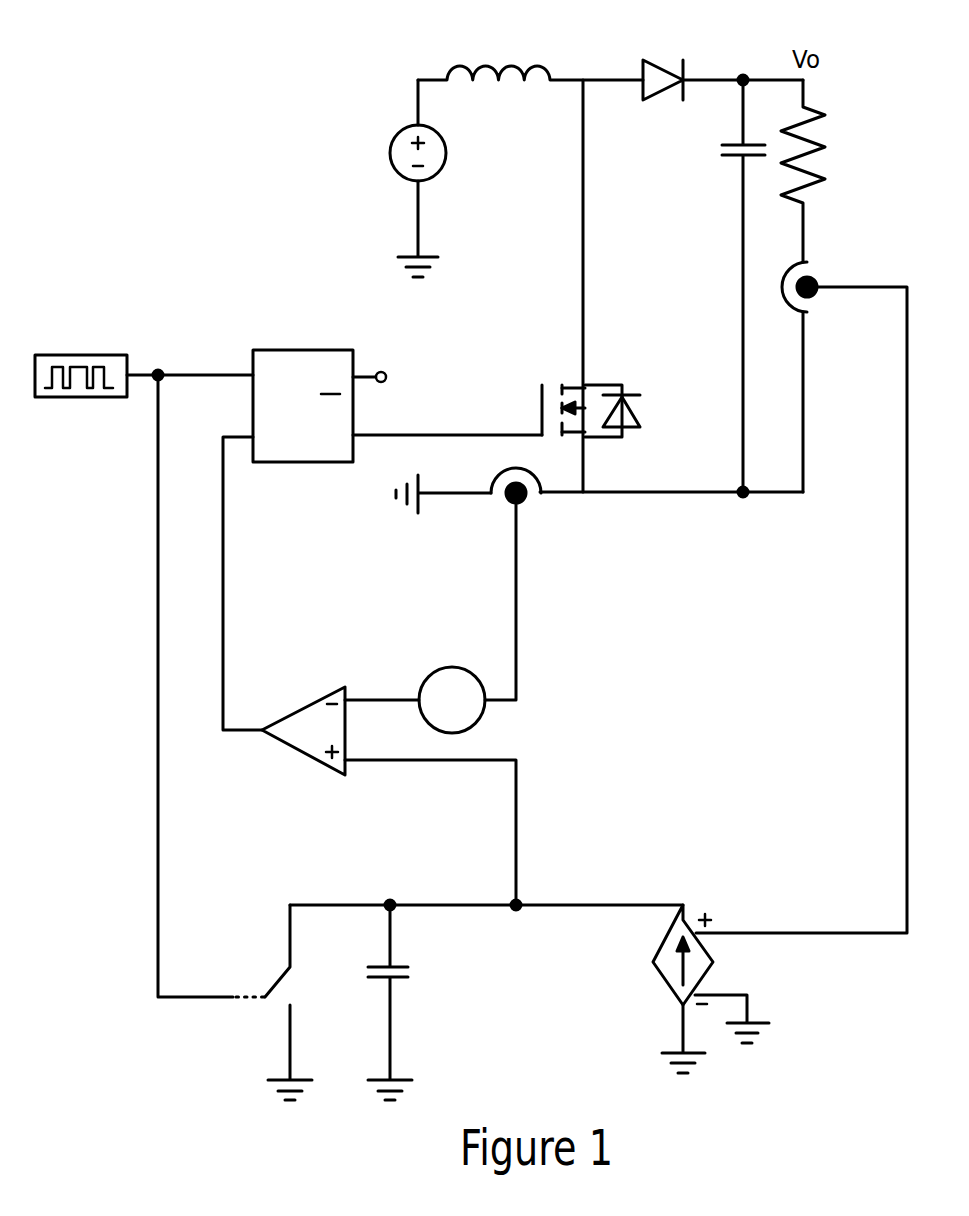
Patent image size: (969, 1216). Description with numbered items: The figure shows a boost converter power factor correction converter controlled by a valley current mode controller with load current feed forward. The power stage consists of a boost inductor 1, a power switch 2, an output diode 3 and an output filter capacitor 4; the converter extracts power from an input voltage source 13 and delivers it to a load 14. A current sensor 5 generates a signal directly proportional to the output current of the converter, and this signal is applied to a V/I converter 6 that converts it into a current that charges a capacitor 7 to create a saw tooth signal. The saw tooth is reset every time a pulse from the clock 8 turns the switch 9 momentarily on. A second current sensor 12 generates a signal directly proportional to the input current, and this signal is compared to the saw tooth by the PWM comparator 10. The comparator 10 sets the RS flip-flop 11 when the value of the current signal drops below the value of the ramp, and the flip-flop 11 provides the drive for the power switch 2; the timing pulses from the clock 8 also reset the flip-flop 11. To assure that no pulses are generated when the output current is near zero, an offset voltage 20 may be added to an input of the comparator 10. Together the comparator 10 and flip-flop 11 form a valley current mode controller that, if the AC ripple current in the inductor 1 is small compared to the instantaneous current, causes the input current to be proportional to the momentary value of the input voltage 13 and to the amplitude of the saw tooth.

The boost inductor 1 is at (487, 60).
The power switch 2 is at (531, 388).
The output diode 3 is at (655, 62).
The output filter capacitor 4 is at (705, 160).
The current sensor 5 is at (815, 306).
The V/I converter 6 is at (710, 968).
The capacitor 7 is at (402, 983).
The clock 8 is at (68, 398).
The switch 9 is at (268, 1015).
The PWM comparator 10 is at (290, 710).
The RS flip-flop 11 is at (250, 358).
The current sensor 12 is at (522, 535).
The input voltage source 13 is at (397, 133).
The load 14 is at (830, 158).
The offset voltage 20 is at (455, 668).